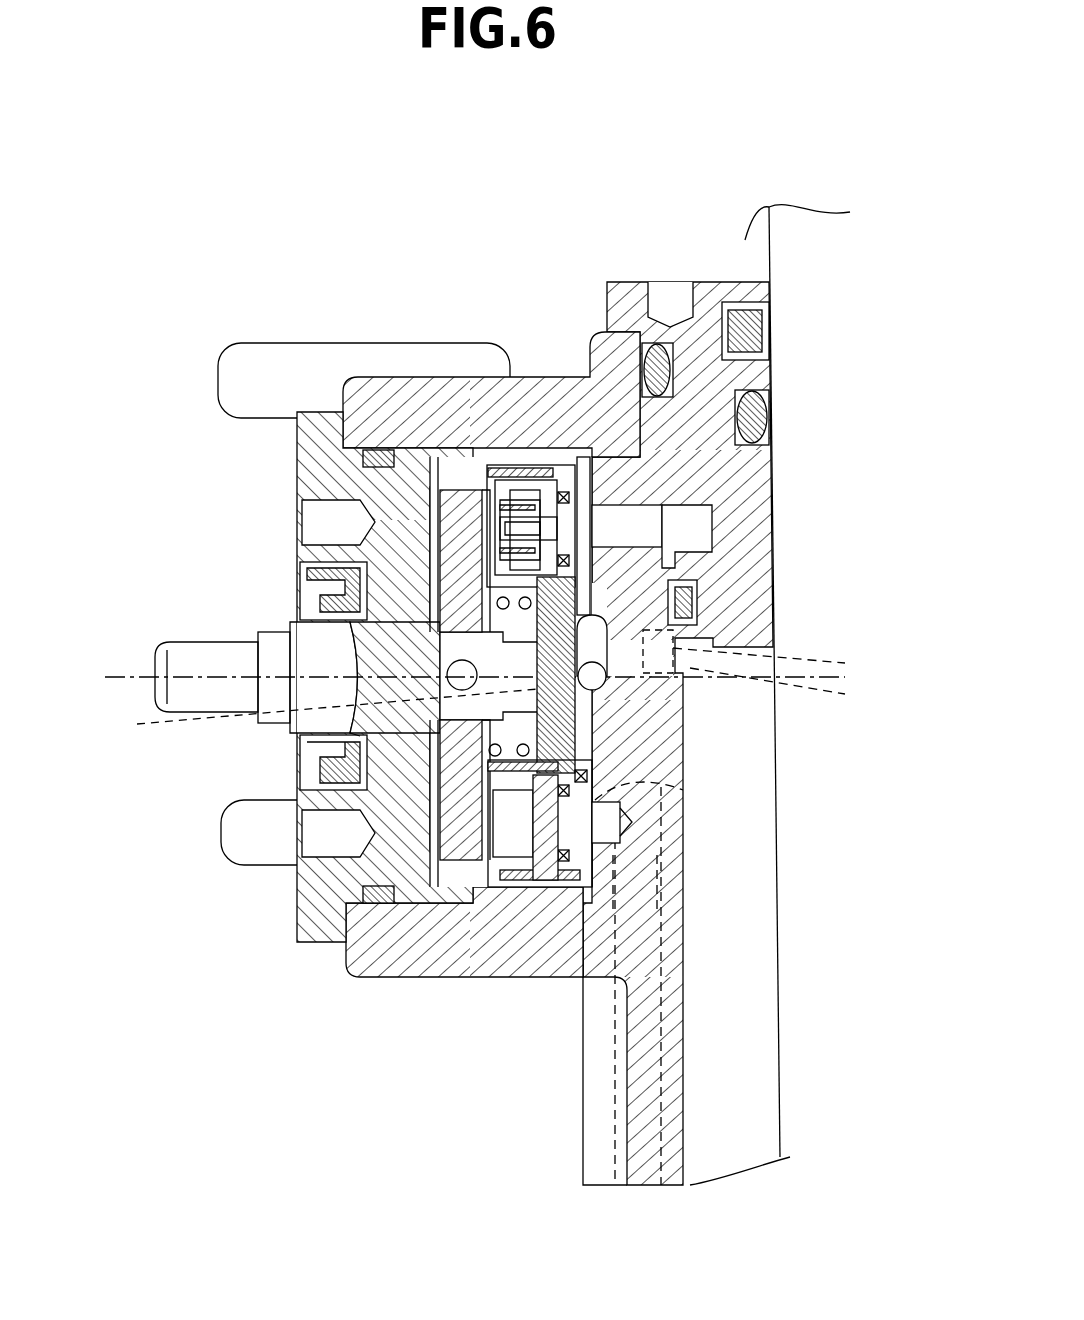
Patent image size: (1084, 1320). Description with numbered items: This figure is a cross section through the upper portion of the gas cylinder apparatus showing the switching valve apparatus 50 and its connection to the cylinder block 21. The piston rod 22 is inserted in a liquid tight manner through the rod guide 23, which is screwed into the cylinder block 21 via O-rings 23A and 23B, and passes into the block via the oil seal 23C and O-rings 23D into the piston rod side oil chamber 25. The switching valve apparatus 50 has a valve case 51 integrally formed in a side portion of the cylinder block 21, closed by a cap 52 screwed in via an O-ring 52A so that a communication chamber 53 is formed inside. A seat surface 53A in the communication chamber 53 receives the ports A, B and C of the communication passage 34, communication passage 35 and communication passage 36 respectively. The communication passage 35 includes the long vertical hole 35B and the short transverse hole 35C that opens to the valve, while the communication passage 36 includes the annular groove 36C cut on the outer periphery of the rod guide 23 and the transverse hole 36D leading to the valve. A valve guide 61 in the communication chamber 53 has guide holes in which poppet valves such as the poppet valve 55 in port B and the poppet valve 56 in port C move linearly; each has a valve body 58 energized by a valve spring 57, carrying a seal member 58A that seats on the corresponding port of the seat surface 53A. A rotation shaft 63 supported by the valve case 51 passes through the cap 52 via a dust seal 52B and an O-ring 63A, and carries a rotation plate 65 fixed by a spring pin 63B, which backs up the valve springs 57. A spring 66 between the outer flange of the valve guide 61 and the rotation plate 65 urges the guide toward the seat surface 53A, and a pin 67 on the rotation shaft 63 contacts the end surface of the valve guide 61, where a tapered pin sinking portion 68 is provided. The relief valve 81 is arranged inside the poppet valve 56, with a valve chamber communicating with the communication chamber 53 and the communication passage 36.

The cylinder block 21 is at (583, 1167).
The piston rod 22 is at (745, 240).
The rod guide 23 is at (600, 335).
The O-ring 23A is at (655, 358).
The O-ring 23B is at (692, 602).
The oil seal 23C is at (760, 330).
The O-rings 23D is at (768, 400).
The piston rod side oil chamber 25 is at (740, 970).
The communication passage 34 is at (780, 658).
The communication passage 35 is at (645, 1087).
The vertical hole 35B is at (640, 1110).
The transverse hole 35C is at (650, 803).
The communication passage 36 is at (700, 532).
The annular groove 36C is at (668, 503).
The transverse hole 36D is at (715, 565).
The switching valve apparatus 50 is at (168, 298).
The valve case 51 is at (415, 400).
The cap 52 is at (313, 470).
The O-ring 52A is at (375, 452).
The dust seal 52B is at (302, 580).
The communication chamber 53 is at (470, 760).
The seat surface 53A is at (580, 460).
The poppet valve 55 is at (565, 850).
The poppet valve 56 is at (520, 478).
The valve spring 57 is at (505, 500).
The valve body 58 is at (543, 480).
The seal member 58A is at (680, 470).
The valve guide 61 is at (528, 890).
The rotation shaft 63 is at (172, 660).
The O-ring 63A is at (350, 734).
The spring pin 63B is at (450, 668).
The rotation plate 65 is at (430, 765).
The spring 66 is at (428, 848).
The pin 67 is at (600, 683).
The pin sinking portion 68 is at (160, 723).
The relief valve 81 is at (505, 547).
The port A is at (770, 686).
The port B is at (612, 830).
The port C is at (655, 482).